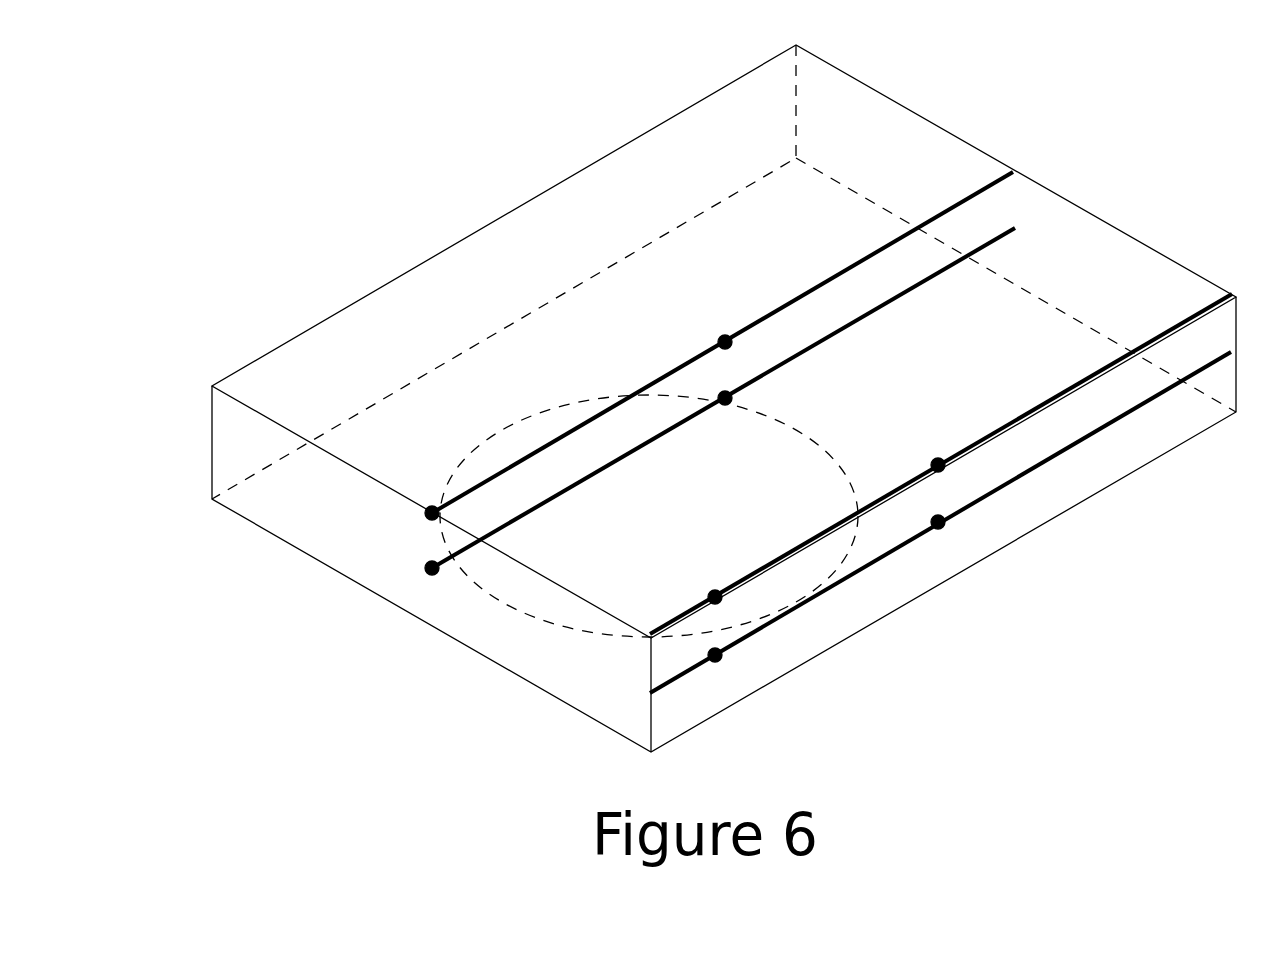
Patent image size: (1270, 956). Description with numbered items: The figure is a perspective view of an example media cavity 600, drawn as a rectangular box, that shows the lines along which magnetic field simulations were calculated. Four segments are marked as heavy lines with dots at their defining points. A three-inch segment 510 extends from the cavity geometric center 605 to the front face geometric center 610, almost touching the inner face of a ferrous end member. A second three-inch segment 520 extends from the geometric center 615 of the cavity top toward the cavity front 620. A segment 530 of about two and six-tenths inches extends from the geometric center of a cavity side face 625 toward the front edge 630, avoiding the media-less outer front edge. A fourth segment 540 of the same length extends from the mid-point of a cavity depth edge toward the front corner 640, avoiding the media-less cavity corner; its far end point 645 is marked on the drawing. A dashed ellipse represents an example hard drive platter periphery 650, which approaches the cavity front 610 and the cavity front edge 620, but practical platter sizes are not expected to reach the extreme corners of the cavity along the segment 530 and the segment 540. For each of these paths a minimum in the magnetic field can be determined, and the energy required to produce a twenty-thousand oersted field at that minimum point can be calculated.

The media cavity 600 is at (446, 230).
The segment 510 is at (590, 477).
The segment 520 is at (615, 402).
The segment 530 is at (748, 637).
The segment 540 is at (780, 556).
The cavity geometric center 605 is at (725, 398).
The front face geometric center 610 is at (432, 568).
The geometric center of the cavity top 615 is at (725, 342).
The cavity front 620 is at (432, 513).
The geometric center of a cavity side face 625 is at (940, 524).
The front edge 630 is at (715, 655).
The front corner 640 is at (715, 597).
The electrode contact 645 is at (938, 465).
The hard drive platter periphery 650 is at (537, 620).